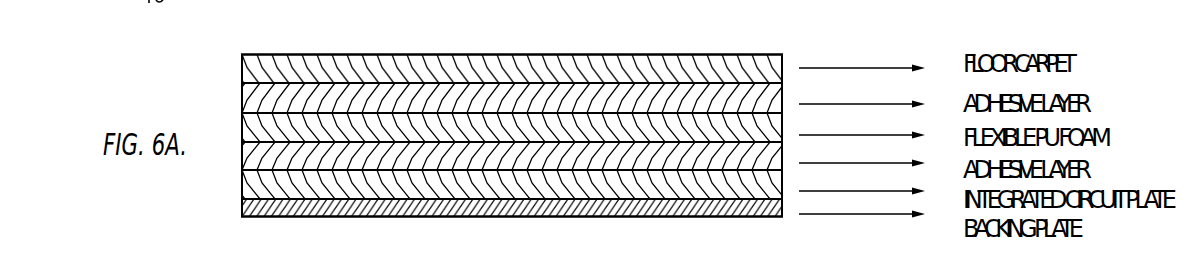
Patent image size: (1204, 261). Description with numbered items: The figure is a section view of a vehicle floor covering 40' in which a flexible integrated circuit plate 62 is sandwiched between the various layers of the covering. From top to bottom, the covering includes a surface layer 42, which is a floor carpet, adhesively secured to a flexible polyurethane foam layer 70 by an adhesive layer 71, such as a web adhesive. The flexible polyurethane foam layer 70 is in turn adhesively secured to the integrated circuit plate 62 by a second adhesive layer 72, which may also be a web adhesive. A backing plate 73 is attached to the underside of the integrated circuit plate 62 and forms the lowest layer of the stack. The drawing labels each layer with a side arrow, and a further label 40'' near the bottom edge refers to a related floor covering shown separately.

The vehicle floor covering 40' is at (445, 133).
The multilayer floor assembly (alternate) 40'' is at (660, 250).
The surface layer 42 is at (242, 65).
The adhesive layer 71 is at (242, 98).
The flexible polyurethane foam layer 70 is at (242, 127).
The adhesive layer 72 is at (242, 155).
The flexible integrated circuit plate 62 is at (242, 187).
The backing plate 73 is at (242, 208).